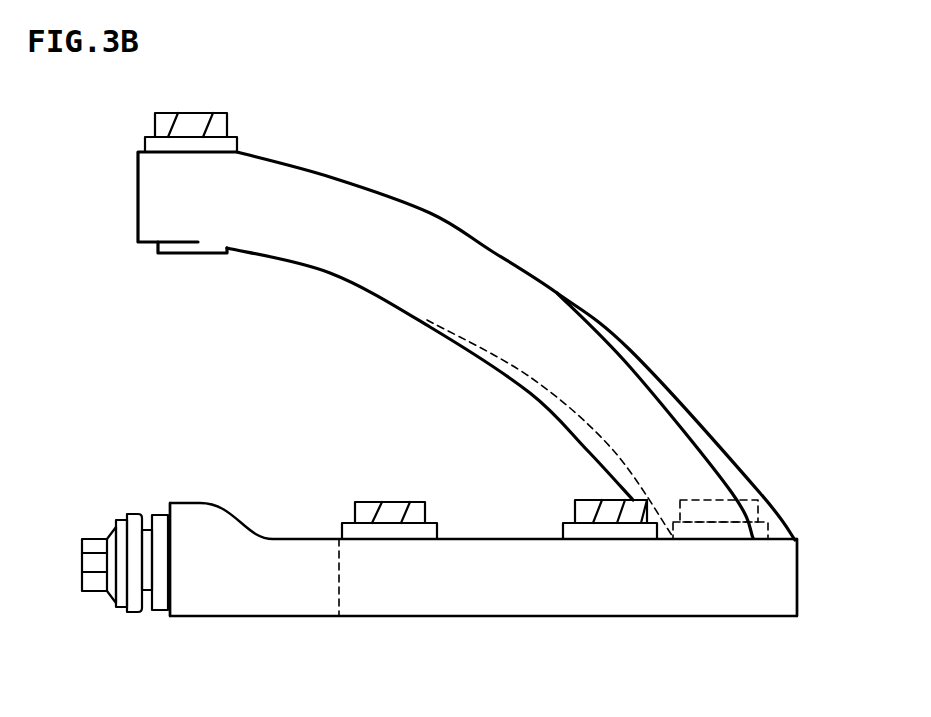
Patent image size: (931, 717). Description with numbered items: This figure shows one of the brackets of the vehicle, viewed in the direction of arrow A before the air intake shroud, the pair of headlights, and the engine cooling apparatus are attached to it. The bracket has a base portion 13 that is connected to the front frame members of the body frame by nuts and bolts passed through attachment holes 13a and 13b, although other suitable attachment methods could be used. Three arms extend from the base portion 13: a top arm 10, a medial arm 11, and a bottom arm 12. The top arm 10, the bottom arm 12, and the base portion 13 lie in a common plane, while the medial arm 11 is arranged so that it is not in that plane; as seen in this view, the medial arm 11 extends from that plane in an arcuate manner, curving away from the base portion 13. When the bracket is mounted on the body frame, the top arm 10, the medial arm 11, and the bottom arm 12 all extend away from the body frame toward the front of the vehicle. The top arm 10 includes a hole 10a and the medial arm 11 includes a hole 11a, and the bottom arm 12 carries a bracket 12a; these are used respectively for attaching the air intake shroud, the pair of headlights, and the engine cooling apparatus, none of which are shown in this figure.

The top arm 10 is at (488, 568).
The hole 10a is at (388, 537).
The medial arm 11 is at (415, 252).
The hole 11a is at (200, 150).
The bottom arm 12 is at (261, 580).
The bracket 12a is at (168, 523).
The base portion 13 is at (765, 577).
The attachment hole 13a is at (733, 480).
The attachment hole 13b is at (612, 540).